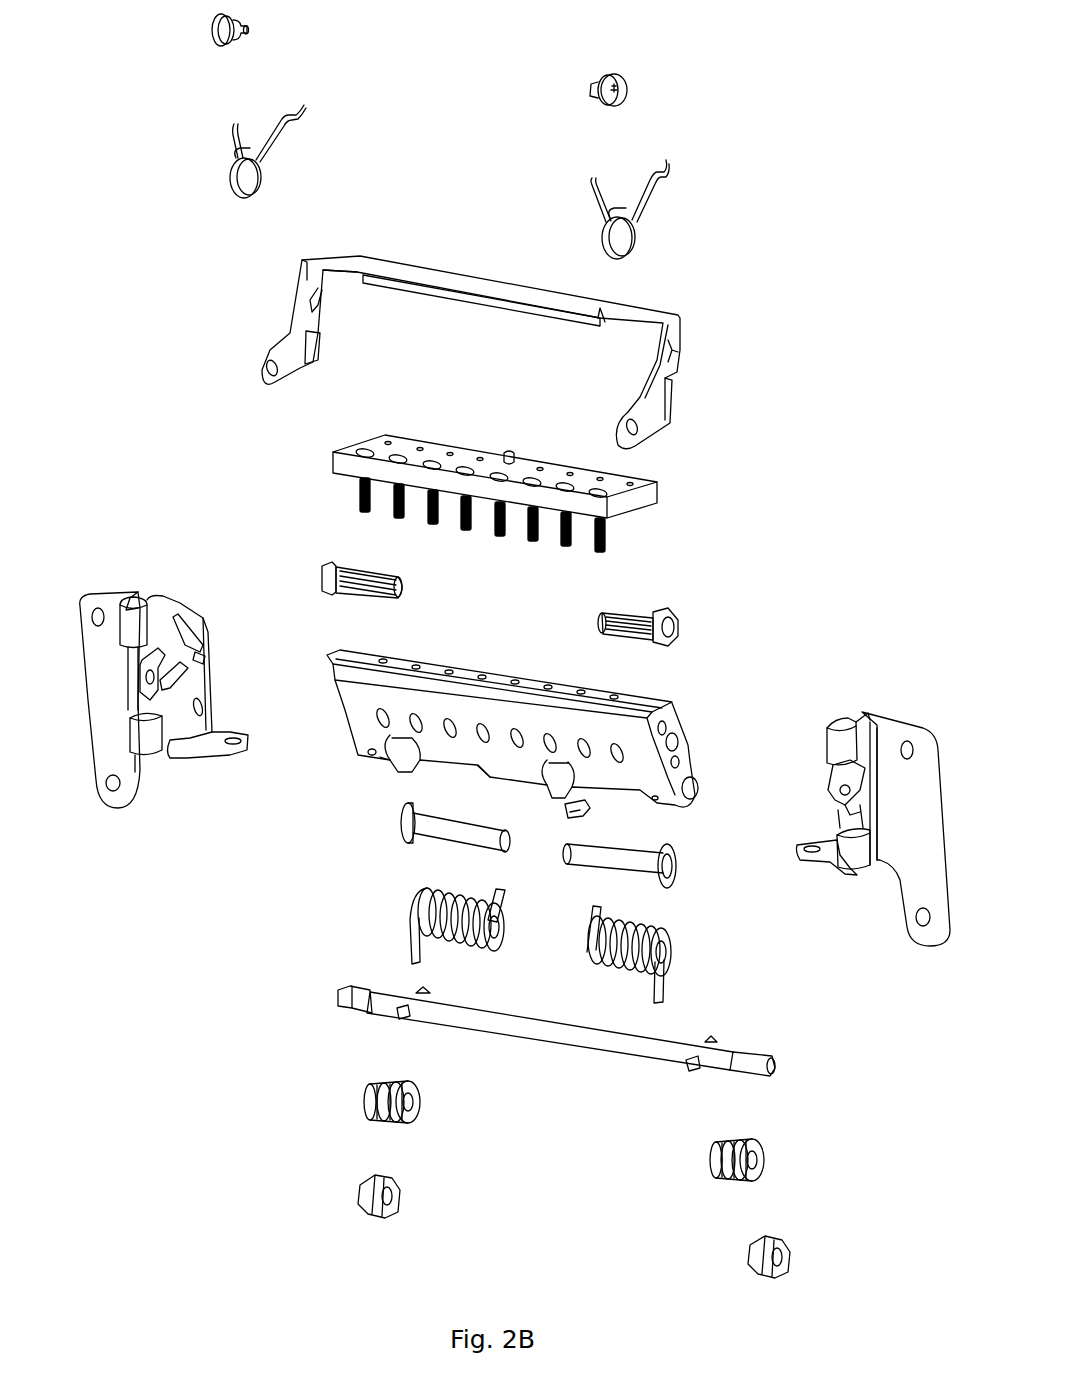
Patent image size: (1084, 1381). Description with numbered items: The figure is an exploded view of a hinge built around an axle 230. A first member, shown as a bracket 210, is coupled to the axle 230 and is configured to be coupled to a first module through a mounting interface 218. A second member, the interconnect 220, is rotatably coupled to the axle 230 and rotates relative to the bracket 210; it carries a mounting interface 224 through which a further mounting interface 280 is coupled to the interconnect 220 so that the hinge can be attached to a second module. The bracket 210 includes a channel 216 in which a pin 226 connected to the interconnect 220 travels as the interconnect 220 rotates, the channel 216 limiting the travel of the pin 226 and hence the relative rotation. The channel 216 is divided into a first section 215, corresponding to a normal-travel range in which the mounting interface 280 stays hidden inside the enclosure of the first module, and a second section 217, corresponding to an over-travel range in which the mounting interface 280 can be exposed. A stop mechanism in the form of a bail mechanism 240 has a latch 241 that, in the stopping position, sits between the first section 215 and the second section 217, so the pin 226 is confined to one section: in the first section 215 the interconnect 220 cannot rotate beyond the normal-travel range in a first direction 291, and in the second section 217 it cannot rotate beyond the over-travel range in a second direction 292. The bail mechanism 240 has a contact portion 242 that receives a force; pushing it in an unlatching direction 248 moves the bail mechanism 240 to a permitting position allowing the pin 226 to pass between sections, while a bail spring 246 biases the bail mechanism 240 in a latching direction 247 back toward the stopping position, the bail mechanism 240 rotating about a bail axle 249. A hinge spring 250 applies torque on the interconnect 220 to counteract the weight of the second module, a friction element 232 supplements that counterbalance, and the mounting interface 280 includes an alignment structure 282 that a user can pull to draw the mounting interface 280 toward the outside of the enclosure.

The bracket 210 is at (166, 716).
The first section 215 is at (181, 685).
The channel 216 is at (192, 648).
The second section 217 is at (199, 662).
The mounting interface 218 is at (113, 786).
The interconnect 220 is at (692, 727).
The mounting interface 224 is at (496, 675).
The pin 226 is at (676, 630).
The axle 230 is at (676, 1052).
The friction element 232 is at (760, 1145).
The bail mechanism 240 is at (690, 358).
The latch 241 is at (320, 348).
The contact portion 242 is at (400, 278).
The bail spring 246 is at (606, 240).
The latching direction 247 is at (598, 293).
The unlatching direction 248 is at (544, 314).
The bail axle 249 is at (596, 82).
The hinge spring 250 is at (655, 942).
The mounting interface 280 is at (668, 483).
The alignment structure 282 is at (512, 456).
The first direction 291 is at (460, 597).
The second direction 292 is at (296, 760).